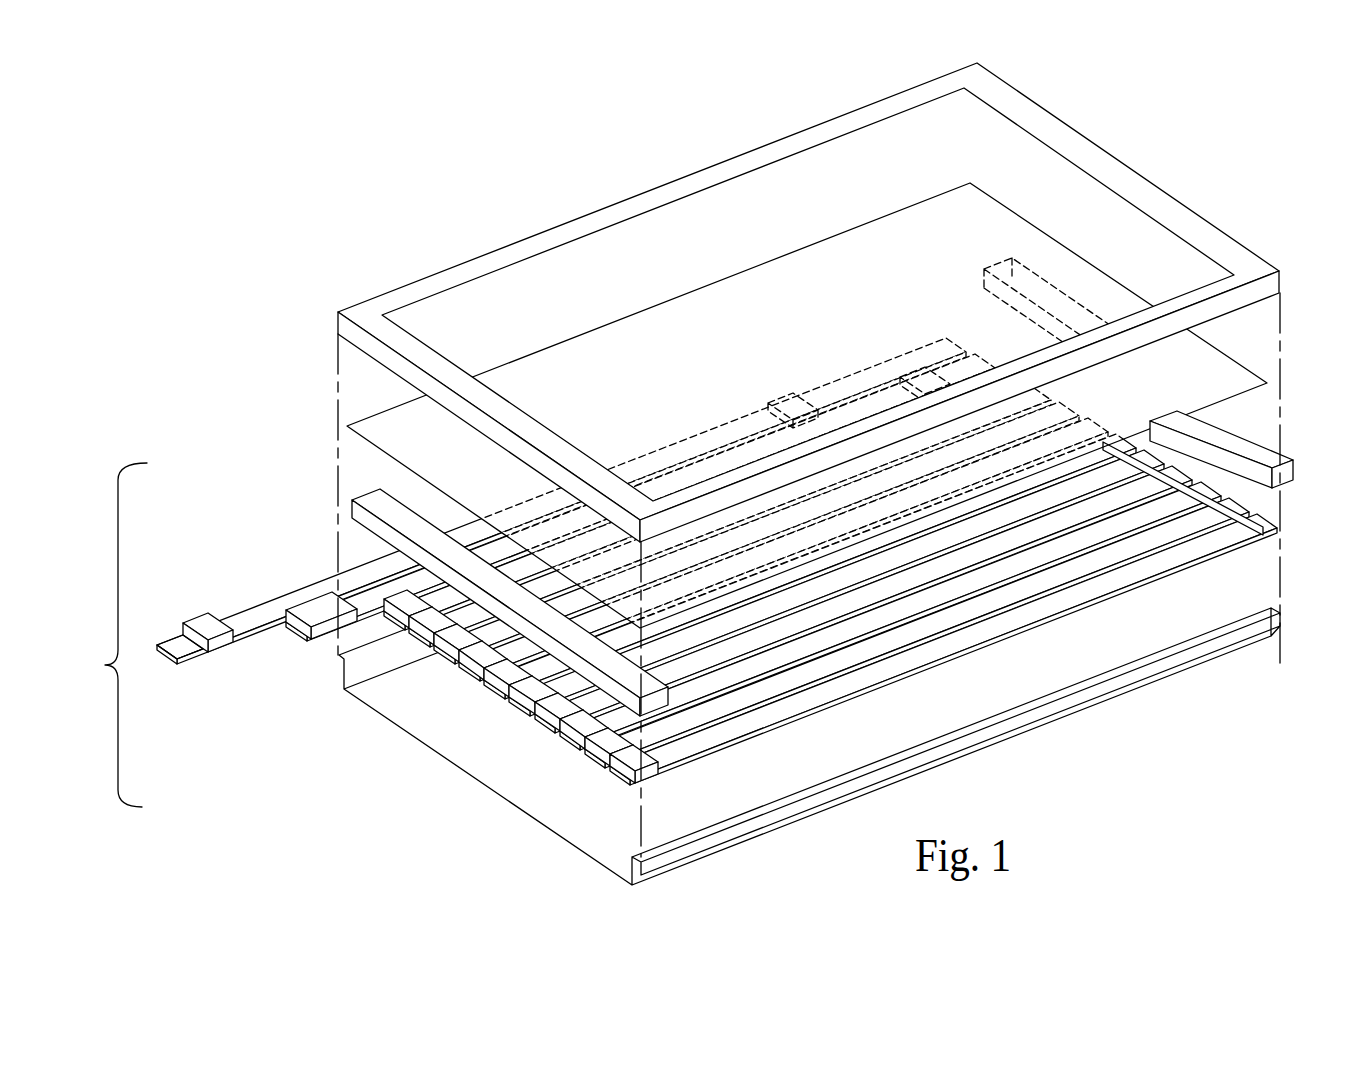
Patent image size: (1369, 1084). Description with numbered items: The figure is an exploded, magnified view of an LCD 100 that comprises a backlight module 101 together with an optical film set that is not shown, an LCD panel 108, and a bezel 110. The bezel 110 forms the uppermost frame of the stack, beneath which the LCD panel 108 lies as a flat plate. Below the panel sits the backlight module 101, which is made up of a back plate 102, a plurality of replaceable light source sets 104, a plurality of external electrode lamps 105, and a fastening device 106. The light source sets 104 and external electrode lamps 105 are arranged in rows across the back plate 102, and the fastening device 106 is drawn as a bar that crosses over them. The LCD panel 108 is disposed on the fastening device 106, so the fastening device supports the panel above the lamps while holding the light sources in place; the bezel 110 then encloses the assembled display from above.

The LCD 100 is at (1224, 150).
The backlight module 101 is at (105, 665).
The back plate 102 is at (383, 692).
The replaceable light source sets 104 is at (167, 628).
The external electrode lamps 105 is at (238, 617).
The fastening device 106 is at (360, 512).
The LCD panel 108 is at (398, 417).
The bezel 110 is at (423, 285).